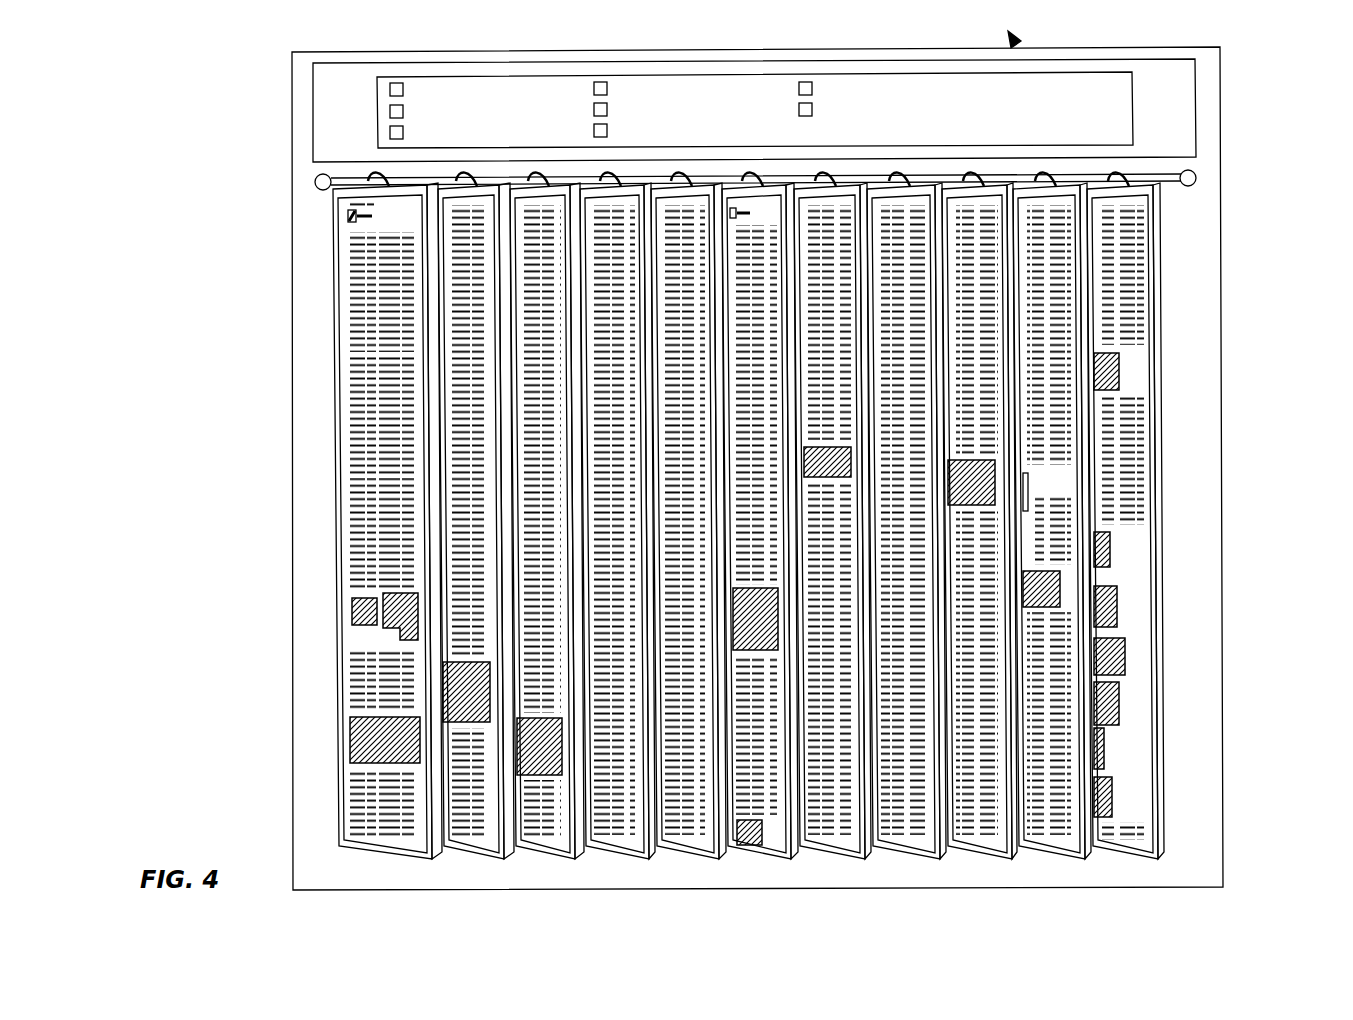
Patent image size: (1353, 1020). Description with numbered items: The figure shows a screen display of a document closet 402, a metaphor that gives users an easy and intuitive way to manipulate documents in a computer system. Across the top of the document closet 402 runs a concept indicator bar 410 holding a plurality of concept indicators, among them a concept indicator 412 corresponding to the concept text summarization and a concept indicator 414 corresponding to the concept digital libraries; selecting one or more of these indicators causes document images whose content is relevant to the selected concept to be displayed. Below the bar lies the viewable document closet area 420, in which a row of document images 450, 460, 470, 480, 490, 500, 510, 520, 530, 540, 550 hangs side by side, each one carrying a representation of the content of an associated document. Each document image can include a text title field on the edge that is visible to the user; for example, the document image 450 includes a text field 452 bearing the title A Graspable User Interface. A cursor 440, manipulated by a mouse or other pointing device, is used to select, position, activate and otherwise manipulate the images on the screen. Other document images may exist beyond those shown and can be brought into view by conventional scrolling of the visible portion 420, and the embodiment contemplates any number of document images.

The document closet 402 is at (1272, 146).
The concept indicator bar 410 is at (377, 105).
The concept indicator 412 is at (543, 88).
The concept indicator 414 is at (726, 100).
The viewable document closet area 420 is at (312, 798).
The cursor 440 is at (1021, 41).
The document image 450 is at (365, 852).
The text field 452 is at (442, 858).
The document image 460 is at (478, 855).
The document image 470 is at (543, 855).
The document image 480 is at (612, 855).
The document image 490 is at (683, 855).
The document image 500 is at (742, 855).
The document image 510 is at (848, 858).
The document image 520 is at (916, 858).
The document image 530 is at (985, 858).
The document image 540 is at (1058, 858).
The document image 550 is at (1132, 858).